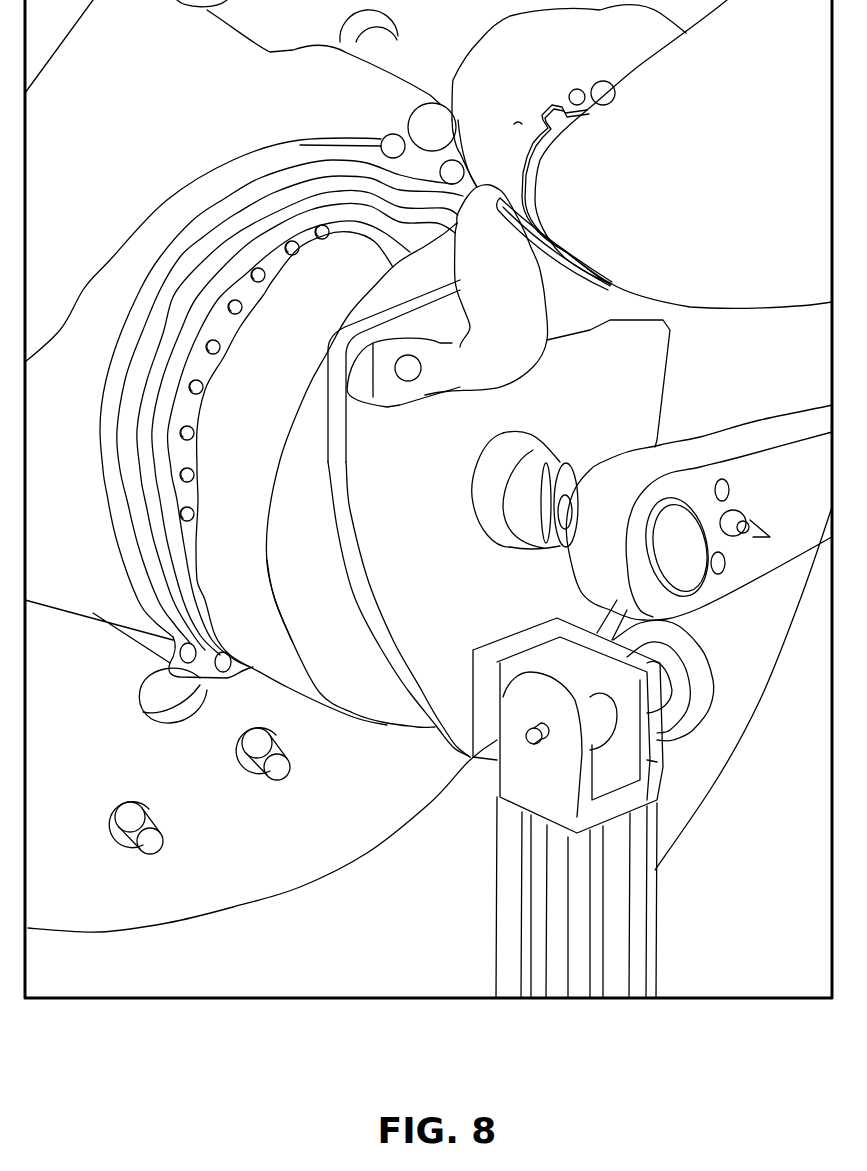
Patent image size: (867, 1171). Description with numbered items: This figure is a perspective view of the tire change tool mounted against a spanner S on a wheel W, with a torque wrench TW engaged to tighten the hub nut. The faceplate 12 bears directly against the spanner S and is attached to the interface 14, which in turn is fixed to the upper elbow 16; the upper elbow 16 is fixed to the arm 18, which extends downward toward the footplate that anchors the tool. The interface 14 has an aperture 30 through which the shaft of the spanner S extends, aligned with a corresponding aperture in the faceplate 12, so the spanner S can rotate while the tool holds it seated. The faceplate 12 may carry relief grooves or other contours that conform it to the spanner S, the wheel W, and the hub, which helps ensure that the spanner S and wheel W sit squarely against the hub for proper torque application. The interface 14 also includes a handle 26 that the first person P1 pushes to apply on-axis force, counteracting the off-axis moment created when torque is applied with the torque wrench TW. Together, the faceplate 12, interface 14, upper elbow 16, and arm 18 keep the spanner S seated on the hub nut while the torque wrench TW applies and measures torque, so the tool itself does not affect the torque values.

The faceplate 12 is at (288, 473).
The interface 14 is at (468, 490).
The upper elbow 16 is at (593, 716).
The arm 18 is at (576, 897).
The handle 26 is at (447, 330).
The aperture 30 is at (497, 537).
The spanner S is at (540, 473).
The torque wrench TW is at (707, 447).
The wheel W is at (428, 466).
The first person P1 is at (628, 197).